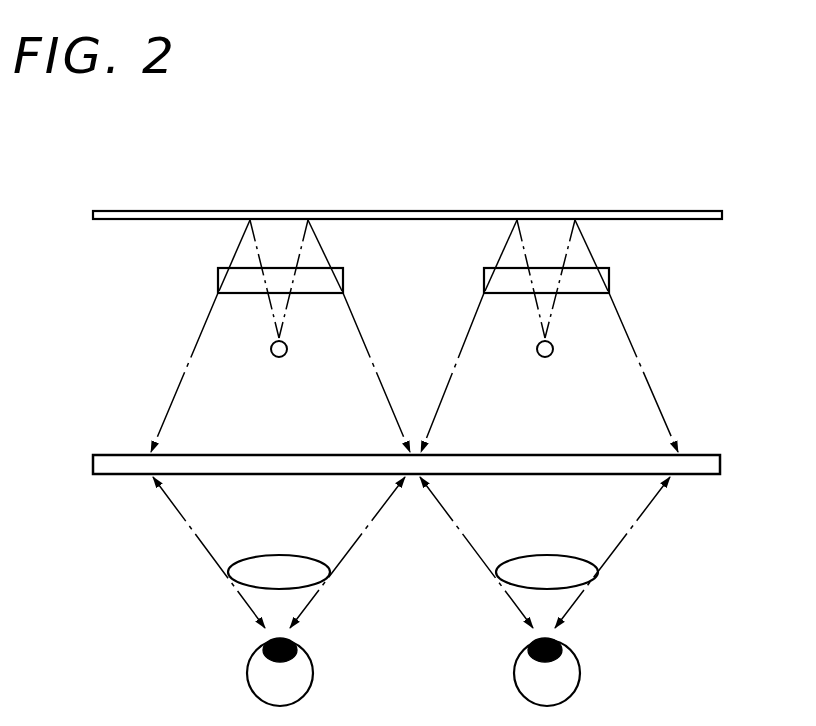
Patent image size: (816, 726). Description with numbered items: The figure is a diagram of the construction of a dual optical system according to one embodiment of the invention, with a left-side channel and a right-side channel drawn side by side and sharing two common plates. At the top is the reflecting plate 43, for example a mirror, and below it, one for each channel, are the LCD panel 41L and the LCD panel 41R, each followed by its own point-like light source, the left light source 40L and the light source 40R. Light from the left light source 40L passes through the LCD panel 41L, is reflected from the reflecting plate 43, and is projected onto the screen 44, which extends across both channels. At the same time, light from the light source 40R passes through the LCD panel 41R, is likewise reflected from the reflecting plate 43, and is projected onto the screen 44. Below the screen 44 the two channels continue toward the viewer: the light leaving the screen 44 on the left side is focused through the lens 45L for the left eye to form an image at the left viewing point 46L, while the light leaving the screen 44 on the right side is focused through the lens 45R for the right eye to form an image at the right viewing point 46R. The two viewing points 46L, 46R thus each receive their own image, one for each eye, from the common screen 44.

The reflecting plate 43 is at (213, 210).
The LCD panel 41L is at (343, 280).
The LCD panel 41R is at (609, 278).
The left light source 40L is at (286, 354).
The light source 40R is at (552, 354).
The screen 44 is at (708, 454).
The lens for the left eye 45L is at (285, 555).
The lens for the right eye 45R is at (559, 555).
The left viewing point 46L is at (313, 670).
The right viewing point 46R is at (580, 670).